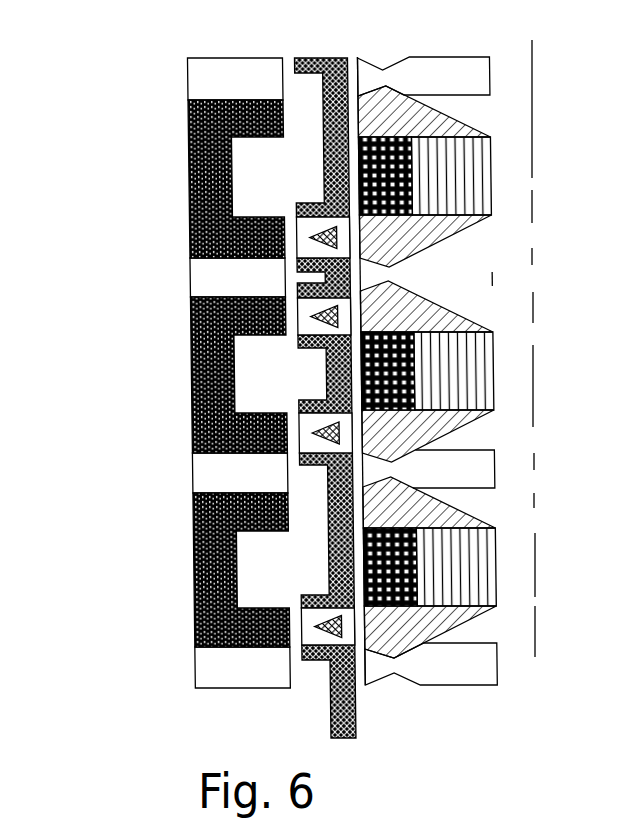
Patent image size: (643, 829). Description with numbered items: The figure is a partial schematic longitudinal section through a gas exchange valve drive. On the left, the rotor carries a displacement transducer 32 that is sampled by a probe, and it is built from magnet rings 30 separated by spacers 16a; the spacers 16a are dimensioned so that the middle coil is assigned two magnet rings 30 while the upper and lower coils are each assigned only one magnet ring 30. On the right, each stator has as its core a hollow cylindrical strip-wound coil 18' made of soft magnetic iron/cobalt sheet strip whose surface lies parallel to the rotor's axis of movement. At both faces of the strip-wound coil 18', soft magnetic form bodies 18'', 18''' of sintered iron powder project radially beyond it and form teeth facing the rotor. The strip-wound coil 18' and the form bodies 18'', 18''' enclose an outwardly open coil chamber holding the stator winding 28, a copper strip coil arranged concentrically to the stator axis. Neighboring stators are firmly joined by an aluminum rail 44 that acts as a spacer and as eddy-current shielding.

The displacement transducer 32 is at (203, 177).
The spacers 16a is at (323, 173).
The magnet rings 30 is at (313, 438).
The aluminum rail 44 is at (473, 73).
The soft magnetic form body 18'' is at (484, 366).
The stator winding 28 is at (410, 173).
The strip-wound coil 18' is at (526, 415).
The soft magnetic form body 18''' is at (498, 273).